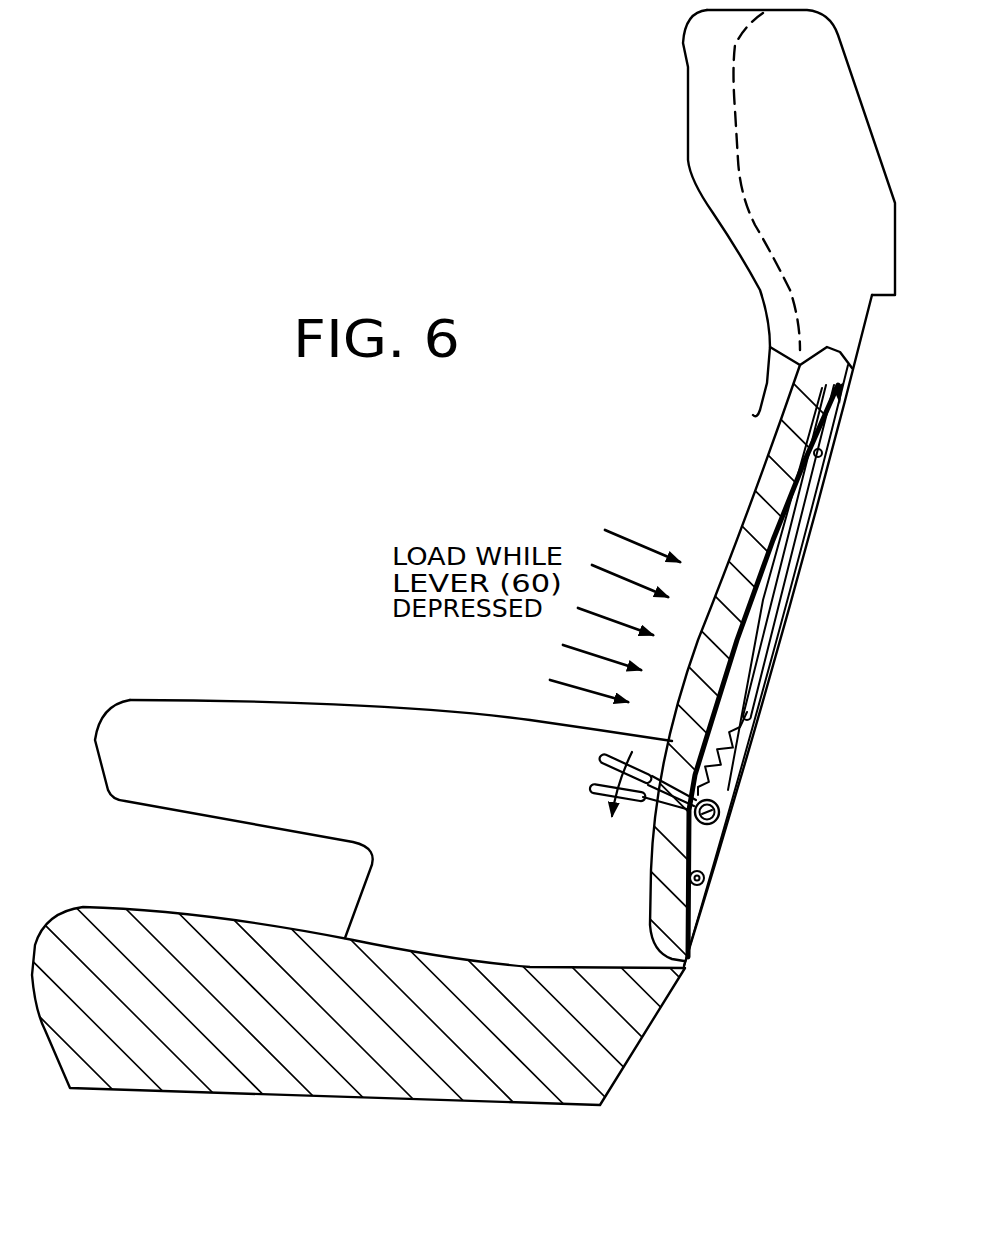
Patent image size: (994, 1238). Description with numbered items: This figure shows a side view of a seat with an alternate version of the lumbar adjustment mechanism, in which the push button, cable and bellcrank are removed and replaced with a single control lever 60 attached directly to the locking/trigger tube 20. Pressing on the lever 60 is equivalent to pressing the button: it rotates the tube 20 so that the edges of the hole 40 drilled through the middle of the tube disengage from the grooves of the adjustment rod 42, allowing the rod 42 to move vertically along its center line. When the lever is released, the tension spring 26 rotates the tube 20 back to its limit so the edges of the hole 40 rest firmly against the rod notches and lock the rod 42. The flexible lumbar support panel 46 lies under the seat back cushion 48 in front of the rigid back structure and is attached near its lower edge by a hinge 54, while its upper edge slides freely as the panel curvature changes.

The locking/trigger tube 20 is at (720, 817).
The tension spring 26 is at (750, 737).
The hole 40 is at (778, 847).
The adjustment rod 42 is at (753, 678).
The lumbar support panel 46 is at (778, 660).
The seat back cushion 48 is at (752, 498).
The hinge 54 is at (706, 882).
The control lever 60 is at (600, 767).